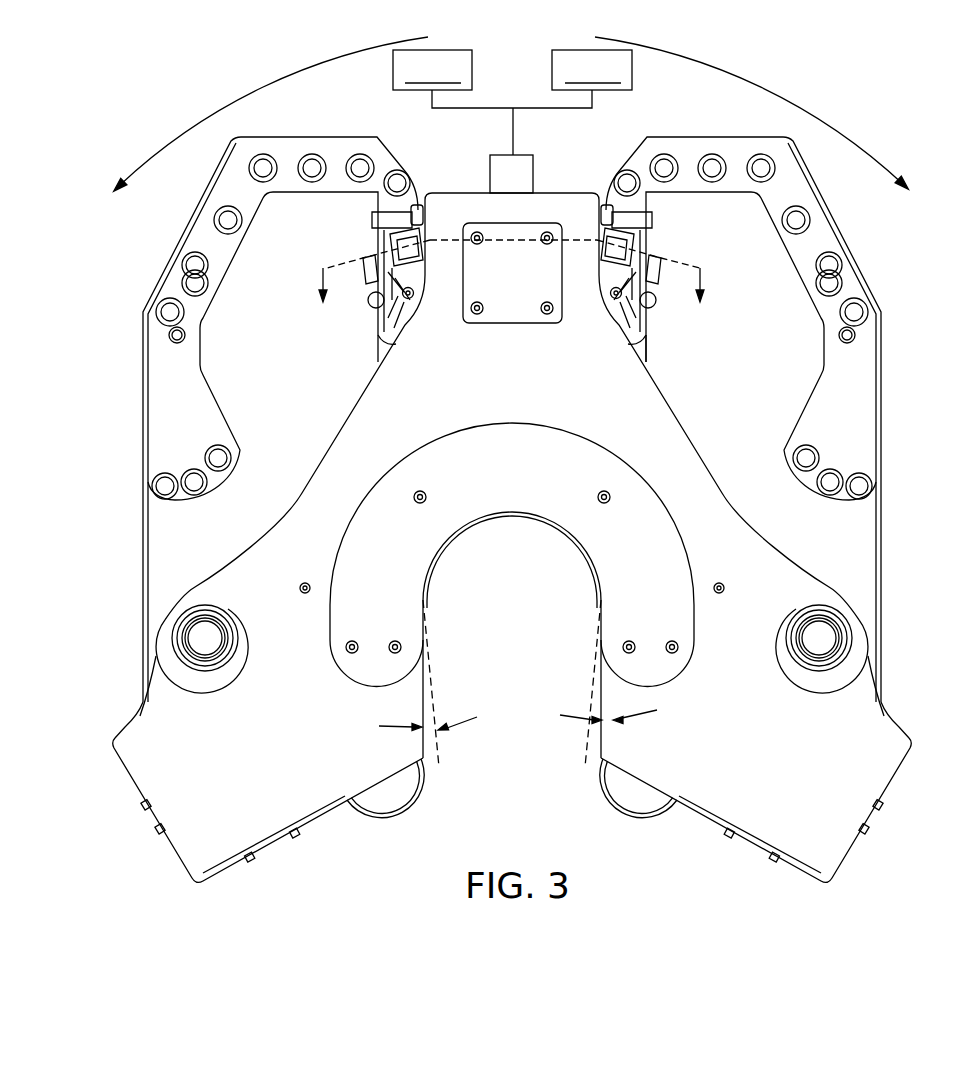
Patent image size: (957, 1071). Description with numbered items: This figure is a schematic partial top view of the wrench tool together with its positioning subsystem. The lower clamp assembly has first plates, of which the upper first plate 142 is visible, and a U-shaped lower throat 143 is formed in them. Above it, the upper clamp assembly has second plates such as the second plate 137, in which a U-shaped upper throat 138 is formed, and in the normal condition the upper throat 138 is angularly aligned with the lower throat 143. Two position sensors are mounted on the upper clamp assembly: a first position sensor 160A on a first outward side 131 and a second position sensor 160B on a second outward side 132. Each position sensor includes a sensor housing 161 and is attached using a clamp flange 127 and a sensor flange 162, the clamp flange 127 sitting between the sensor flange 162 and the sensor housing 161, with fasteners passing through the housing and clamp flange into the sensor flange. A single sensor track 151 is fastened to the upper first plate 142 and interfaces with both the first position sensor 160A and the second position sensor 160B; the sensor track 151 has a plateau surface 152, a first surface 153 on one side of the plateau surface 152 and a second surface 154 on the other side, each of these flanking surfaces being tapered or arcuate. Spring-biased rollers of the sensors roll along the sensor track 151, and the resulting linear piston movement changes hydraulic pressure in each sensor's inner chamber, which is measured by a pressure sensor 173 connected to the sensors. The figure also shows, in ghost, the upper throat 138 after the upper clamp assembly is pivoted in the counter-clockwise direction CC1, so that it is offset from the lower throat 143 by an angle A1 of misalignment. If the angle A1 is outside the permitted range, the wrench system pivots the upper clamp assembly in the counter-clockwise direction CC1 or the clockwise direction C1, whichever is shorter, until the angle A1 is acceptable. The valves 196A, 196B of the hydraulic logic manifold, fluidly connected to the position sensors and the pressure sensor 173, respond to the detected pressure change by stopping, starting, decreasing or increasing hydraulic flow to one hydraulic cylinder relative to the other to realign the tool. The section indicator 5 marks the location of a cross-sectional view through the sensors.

The section line 5- 5 is at (511, 287).
The counter-clockwise direction CC1 is at (238, 100).
The clockwise direction C1 is at (760, 87).
The clamp flange 127 is at (413, 212).
The first outward side 131 is at (255, 251).
The second outward side 132 is at (784, 275).
The second plate 137 is at (340, 447).
The upper throat 138 is at (437, 750).
The upper first plate 142 is at (163, 546).
The lower throat 143 is at (510, 512).
The sensor track 151 is at (656, 320).
The plateau surface 152 is at (627, 303).
The first surface 153 is at (380, 294).
The second surface 154 is at (650, 293).
The first position sensor 160A is at (410, 181).
The second position sensor 160B is at (666, 228).
The sensor housing 161 is at (368, 228).
The sensor flange 162 is at (420, 235).
The pressure sensor 173 is at (522, 152).
The valve 196A is at (492, 79).
The valve 196B is at (592, 70).
The angle of misalignment A1 is at (517, 718).